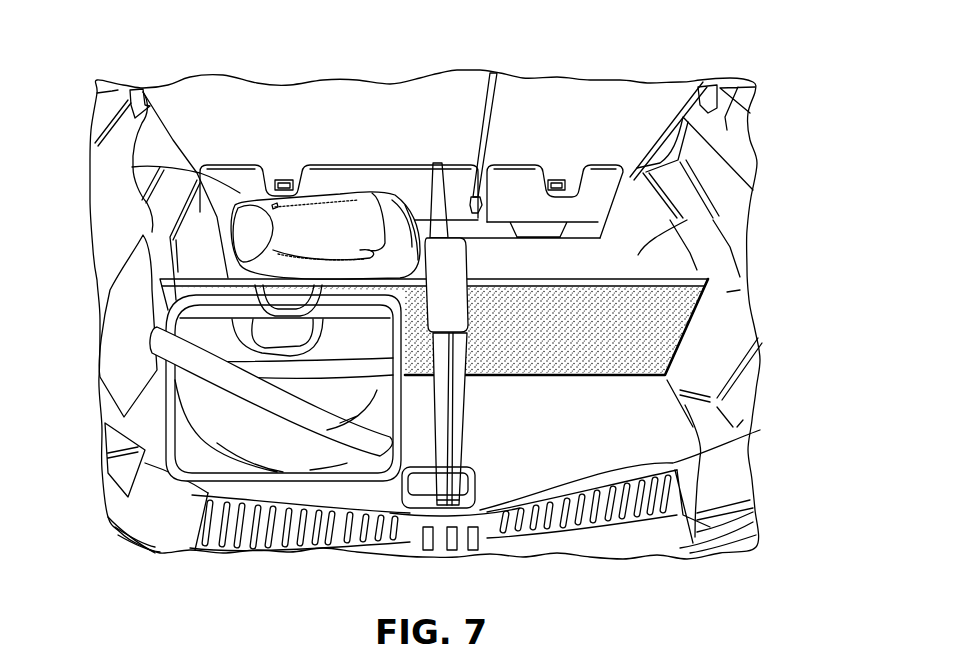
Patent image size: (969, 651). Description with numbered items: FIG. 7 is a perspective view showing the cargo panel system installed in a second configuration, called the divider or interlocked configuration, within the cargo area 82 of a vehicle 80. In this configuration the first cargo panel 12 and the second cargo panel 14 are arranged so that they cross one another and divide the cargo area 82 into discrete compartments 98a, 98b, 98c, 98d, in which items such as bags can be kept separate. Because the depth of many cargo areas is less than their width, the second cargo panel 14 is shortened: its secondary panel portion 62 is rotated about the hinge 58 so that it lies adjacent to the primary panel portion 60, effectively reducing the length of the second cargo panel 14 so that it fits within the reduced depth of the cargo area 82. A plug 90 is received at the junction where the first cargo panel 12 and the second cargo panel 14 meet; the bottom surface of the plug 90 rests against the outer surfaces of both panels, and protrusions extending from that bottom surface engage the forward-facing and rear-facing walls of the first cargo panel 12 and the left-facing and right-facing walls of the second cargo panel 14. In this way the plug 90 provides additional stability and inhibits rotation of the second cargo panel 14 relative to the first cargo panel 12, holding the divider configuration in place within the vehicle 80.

The compartment 98a is at (222, 197).
The second cargo panel 14 is at (469, 190).
The plug 90 is at (466, 262).
The vehicle 80 is at (740, 100).
The compartment 98b is at (655, 236).
The first cargo panel 12 is at (650, 263).
The compartment 98c is at (591, 436).
The compartment 98d is at (281, 493).
The cargo area 82 is at (364, 495).
The secondary panel portion 62 is at (420, 512).
The hinge 58 is at (463, 420).
The primary panel portion 60 is at (470, 400).